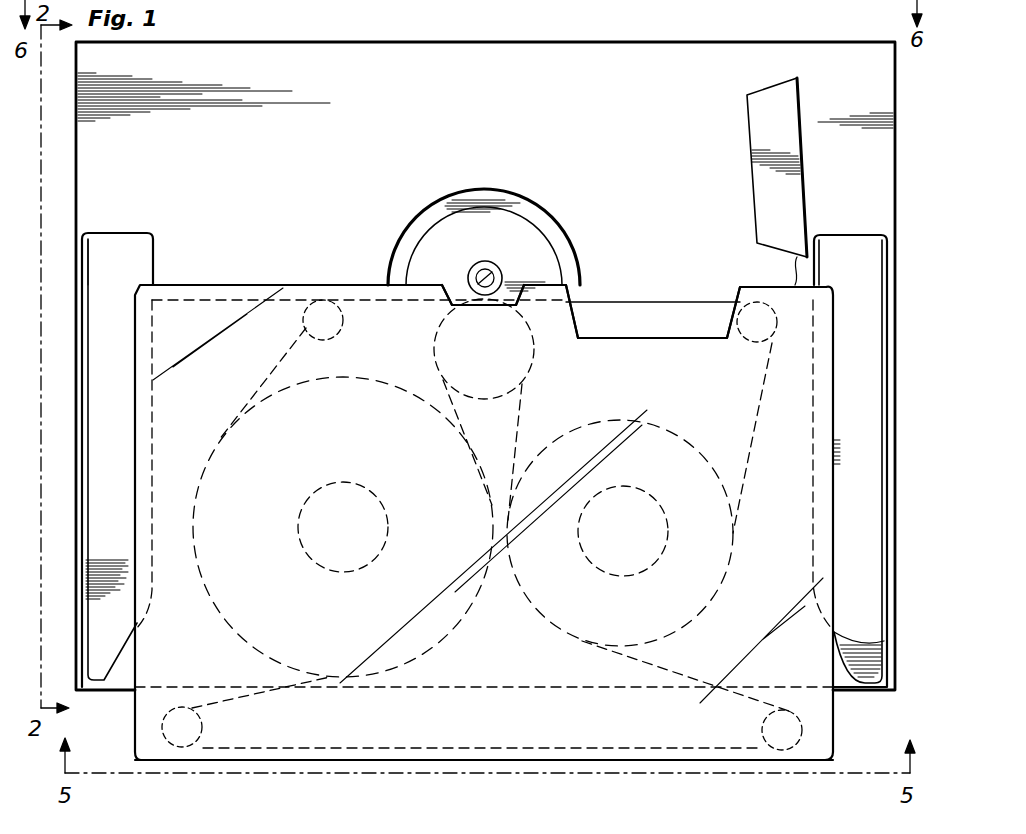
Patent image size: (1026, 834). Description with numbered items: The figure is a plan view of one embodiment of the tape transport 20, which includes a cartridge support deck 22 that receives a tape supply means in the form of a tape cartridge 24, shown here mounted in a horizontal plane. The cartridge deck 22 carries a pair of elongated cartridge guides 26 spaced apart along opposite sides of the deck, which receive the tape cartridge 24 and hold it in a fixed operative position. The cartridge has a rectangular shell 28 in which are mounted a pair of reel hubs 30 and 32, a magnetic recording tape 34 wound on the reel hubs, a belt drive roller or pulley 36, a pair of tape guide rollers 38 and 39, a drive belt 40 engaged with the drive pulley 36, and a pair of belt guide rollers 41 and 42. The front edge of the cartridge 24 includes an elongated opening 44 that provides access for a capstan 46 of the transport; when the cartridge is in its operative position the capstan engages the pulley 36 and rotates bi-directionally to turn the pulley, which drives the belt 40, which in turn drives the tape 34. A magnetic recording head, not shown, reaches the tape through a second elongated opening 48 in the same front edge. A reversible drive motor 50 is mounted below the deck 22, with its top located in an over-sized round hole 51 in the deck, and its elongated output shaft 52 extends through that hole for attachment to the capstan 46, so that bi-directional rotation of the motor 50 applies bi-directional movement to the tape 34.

The tape transport 20 is at (530, 66).
The cartridge support deck 22 is at (882, 160).
The tape cartridge 24 is at (402, 733).
The cartridge guides 26 is at (150, 251).
The rectangular shell 28 is at (484, 521).
The reel hub 30 is at (373, 494).
The reel hub 32 is at (618, 577).
The magnetic recording tape 34 is at (757, 409).
The belt drive roller or pulley 36 is at (483, 400).
The tape guide roller 38 is at (338, 336).
The tape guide roller 39 is at (748, 340).
The drive belt 40 is at (690, 655).
The belt guide roller 41 is at (205, 728).
The belt guide roller 42 is at (762, 727).
The elongated opening 44 is at (457, 288).
The capstan 46 is at (495, 270).
The elongated opening 48 is at (674, 295).
The reversible drive motor 50 is at (507, 239).
The over-sized round hole 51 is at (533, 204).
The output shaft 52 is at (497, 276).